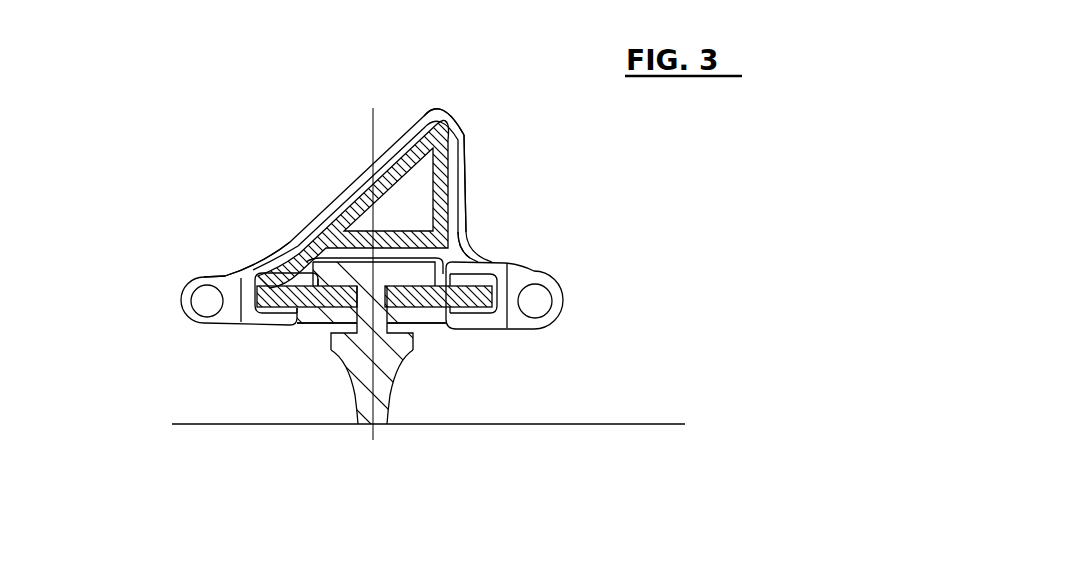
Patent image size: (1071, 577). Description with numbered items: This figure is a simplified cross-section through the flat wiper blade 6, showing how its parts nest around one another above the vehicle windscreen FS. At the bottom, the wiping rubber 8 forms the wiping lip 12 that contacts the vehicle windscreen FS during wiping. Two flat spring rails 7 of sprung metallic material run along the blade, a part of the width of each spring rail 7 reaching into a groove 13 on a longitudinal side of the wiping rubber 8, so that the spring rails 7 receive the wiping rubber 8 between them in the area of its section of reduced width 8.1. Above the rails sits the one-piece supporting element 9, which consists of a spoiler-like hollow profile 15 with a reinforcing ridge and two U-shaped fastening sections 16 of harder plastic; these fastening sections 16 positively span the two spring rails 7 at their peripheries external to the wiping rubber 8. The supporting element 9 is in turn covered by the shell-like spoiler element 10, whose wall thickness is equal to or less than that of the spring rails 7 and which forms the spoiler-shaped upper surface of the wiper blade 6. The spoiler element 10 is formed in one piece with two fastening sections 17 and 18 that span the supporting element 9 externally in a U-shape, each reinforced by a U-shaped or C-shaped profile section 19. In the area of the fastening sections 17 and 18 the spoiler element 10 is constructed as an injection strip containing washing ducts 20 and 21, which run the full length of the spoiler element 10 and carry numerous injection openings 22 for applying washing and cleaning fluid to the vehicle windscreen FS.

The wiper blade 6 is at (383, 118).
The spring rail 7 is at (283, 254).
The wiping rubber 8 is at (322, 360).
The section of reduced width 8.1 is at (455, 236).
The supporting element 9 is at (460, 163).
The spoiler element 10 is at (332, 197).
The wiping lip 12 is at (381, 410).
The groove 13 is at (390, 250).
The hollow profile 15 is at (460, 223).
The fastening section 16 is at (262, 302).
The fastening section 17 is at (206, 258).
The fastening section 18 is at (560, 277).
The profile section 19 is at (283, 314).
The washing duct 20 is at (203, 294).
The washing duct 21 is at (540, 303).
The injection opening 22 is at (186, 316).
The vehicle windscreen FS is at (603, 424).